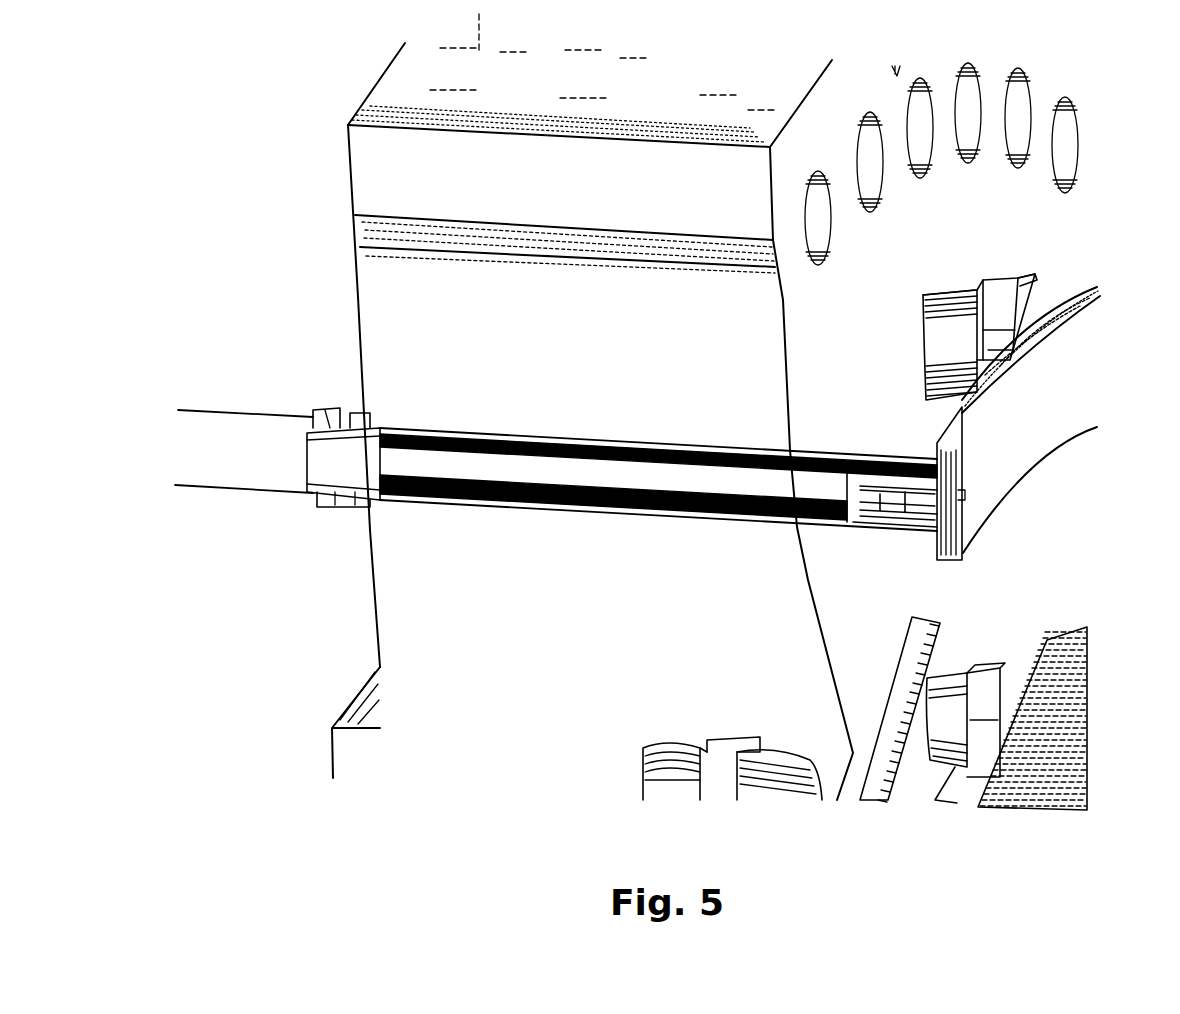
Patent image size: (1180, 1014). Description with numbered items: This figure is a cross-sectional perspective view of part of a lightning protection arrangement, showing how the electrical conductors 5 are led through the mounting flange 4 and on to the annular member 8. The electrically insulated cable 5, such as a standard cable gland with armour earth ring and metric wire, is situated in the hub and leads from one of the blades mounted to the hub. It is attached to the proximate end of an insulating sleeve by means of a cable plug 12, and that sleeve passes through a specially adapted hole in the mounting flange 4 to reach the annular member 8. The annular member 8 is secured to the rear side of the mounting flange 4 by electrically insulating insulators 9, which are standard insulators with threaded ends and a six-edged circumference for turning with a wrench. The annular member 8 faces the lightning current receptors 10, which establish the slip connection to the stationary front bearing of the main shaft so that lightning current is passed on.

The mounting flange 4 is at (1075, 230).
The electrical conductors 5 is at (230, 433).
The annular member 8 is at (1080, 373).
The electrically insulating insulators 9 is at (1060, 292).
The lightning current receptors 10 is at (717, 472).
The cable plug 12 is at (318, 410).